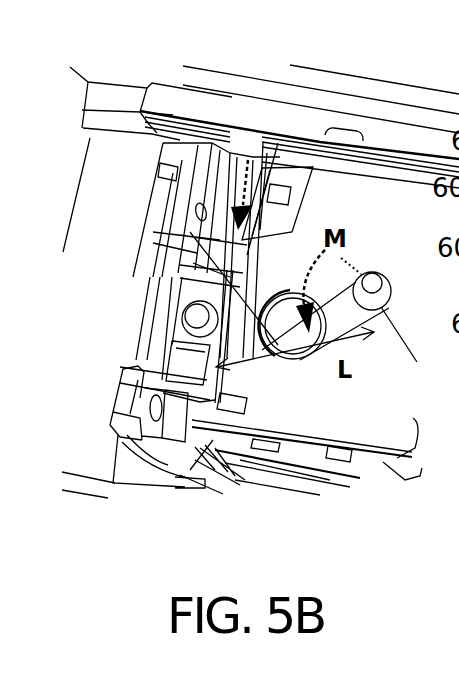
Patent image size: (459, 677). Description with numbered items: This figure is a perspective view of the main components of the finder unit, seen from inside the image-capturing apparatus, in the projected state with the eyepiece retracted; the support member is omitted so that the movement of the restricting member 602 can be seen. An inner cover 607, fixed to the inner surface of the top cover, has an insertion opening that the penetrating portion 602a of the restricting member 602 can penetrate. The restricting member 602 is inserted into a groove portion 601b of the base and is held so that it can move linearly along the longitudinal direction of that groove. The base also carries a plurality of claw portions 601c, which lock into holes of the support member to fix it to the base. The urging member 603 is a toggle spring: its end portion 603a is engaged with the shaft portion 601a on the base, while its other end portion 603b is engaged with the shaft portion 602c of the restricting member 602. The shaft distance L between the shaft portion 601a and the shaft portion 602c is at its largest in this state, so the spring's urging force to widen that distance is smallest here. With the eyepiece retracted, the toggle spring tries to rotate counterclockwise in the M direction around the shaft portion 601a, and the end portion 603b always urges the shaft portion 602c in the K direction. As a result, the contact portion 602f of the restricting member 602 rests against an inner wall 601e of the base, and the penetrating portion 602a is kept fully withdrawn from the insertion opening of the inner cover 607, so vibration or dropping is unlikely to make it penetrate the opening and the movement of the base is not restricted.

The inner cover 607 is at (200, 102).
The groove portion 601b is at (255, 167).
The claw portions 601c is at (280, 187).
The shaft portion 601a is at (393, 256).
The inner wall 601e is at (201, 338).
The restricting member 602 is at (205, 292).
The penetrating portion 602a is at (270, 358).
The shaft portion 602c is at (200, 325).
The contact portion 602f is at (158, 370).
The urging member 603 is at (420, 408).
The end portion 603a is at (420, 350).
The end portion 603b is at (240, 295).